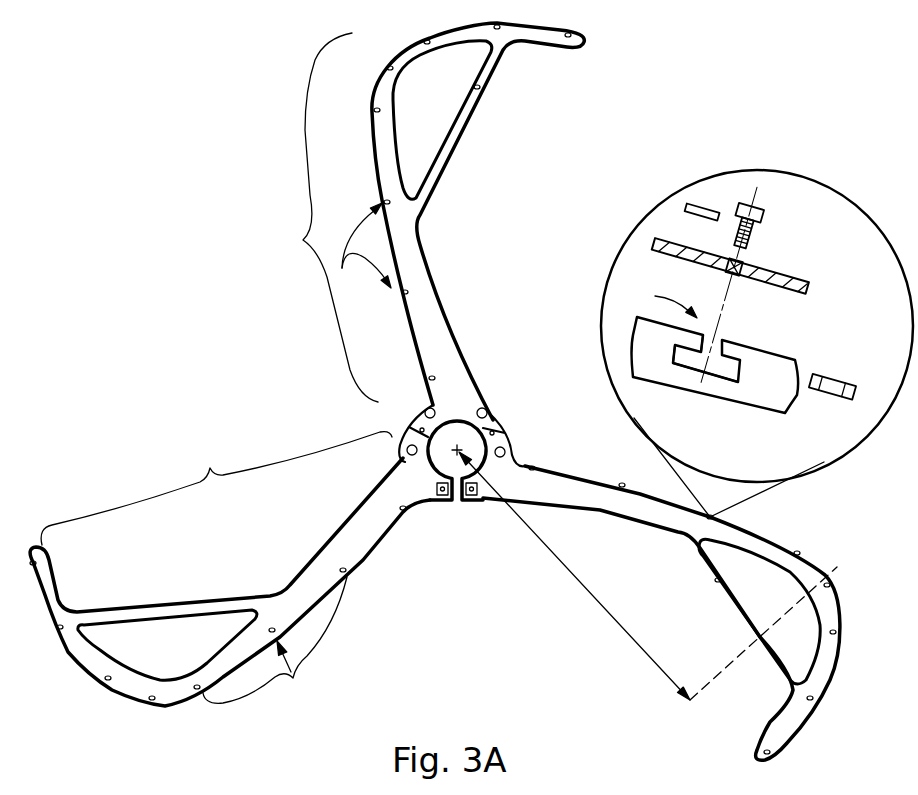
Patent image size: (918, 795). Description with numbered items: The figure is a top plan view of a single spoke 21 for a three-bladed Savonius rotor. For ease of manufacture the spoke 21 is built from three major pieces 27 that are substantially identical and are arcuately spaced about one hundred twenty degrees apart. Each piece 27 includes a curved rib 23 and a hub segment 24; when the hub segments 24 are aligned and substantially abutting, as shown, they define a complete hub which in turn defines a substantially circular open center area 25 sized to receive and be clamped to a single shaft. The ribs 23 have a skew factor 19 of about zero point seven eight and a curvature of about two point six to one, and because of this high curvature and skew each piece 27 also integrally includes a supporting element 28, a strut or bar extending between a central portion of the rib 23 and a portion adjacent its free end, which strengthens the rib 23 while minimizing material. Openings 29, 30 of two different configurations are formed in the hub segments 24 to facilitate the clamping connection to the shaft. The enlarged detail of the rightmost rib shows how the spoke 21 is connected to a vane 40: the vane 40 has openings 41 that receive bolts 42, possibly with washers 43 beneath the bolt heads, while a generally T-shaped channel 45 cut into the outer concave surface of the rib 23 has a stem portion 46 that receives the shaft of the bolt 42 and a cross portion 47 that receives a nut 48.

The skew factor 19 is at (611, 614).
The spoke 21 is at (614, 196).
The rib 23 is at (416, 270).
The hub segment 24 is at (457, 412).
The open center area 25 is at (496, 425).
The major piece 27 is at (216, 289).
The supporting element 28 is at (480, 84).
The opening 29 is at (426, 409).
The opening 30 is at (472, 498).
The vane 40 is at (785, 282).
The opening 41 is at (737, 270).
The bolt 42 is at (752, 238).
The washer 43 is at (700, 207).
The T-shaped channel 45 is at (450, 455).
The stem portion 46 is at (720, 343).
The cross portion 47 is at (714, 368).
The nut 48 is at (847, 402).